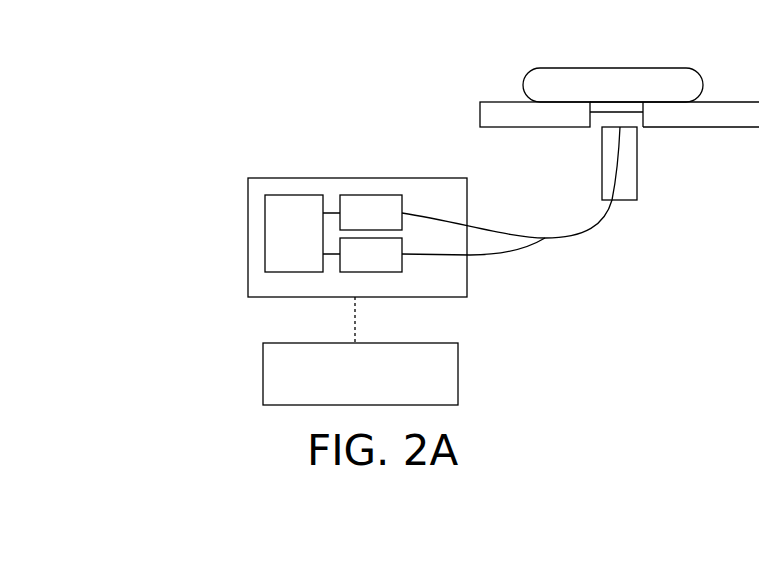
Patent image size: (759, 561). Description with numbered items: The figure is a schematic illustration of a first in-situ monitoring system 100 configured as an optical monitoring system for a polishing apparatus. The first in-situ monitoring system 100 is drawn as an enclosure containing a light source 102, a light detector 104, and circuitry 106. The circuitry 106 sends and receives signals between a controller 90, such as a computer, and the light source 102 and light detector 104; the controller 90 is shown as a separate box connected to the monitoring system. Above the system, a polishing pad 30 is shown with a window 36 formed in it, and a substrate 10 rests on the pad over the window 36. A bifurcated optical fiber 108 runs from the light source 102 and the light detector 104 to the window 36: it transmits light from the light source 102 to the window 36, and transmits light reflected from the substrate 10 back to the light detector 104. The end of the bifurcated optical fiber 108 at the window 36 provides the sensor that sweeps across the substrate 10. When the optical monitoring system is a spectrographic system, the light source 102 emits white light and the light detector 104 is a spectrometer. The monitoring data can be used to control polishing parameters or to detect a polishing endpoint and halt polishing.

The first in-situ monitoring system 100 is at (273, 133).
The circuitry 106 is at (302, 233).
The light source 102 is at (371, 212).
The light detector 104 is at (371, 255).
The bifurcated optical fiber 108 is at (570, 239).
The controller 90 is at (458, 375).
The substrate 10 is at (613, 85).
The window 36 is at (600, 102).
The polishing pad 30 is at (703, 123).